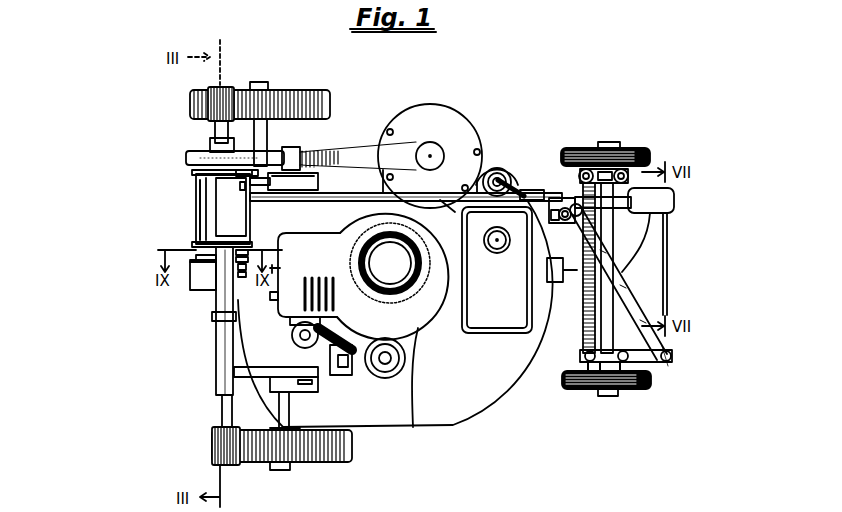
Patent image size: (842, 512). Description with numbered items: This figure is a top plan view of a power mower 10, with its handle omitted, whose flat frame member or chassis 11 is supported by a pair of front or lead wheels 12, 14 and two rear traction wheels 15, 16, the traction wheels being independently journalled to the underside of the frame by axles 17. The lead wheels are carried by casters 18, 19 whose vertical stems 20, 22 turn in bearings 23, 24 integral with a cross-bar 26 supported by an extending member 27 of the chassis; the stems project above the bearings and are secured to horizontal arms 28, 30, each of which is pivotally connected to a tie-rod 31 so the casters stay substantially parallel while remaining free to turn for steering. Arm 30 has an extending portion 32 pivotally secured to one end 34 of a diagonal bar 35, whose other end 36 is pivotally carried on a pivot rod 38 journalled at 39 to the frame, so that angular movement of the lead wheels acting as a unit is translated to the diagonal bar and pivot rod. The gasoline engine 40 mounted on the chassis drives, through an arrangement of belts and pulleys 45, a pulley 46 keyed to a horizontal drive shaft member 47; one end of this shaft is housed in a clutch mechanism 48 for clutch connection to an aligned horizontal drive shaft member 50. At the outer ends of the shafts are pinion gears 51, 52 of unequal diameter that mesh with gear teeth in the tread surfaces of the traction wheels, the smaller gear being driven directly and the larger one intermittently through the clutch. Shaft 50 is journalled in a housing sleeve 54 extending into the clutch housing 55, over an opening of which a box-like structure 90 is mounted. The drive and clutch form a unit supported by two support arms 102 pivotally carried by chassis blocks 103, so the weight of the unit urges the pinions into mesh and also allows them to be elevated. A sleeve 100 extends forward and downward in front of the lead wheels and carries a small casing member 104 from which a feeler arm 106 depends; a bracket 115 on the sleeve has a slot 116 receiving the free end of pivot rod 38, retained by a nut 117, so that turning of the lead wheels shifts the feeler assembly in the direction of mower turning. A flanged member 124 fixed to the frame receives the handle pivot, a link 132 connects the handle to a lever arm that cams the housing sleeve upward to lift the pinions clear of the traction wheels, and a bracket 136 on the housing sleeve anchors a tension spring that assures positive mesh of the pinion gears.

The power mower 10 is at (492, 114).
The frame member or chassis 11 is at (462, 405).
The front or lead wheel 12 is at (652, 158).
The front or lead wheel 14 is at (652, 382).
The traction wheel 15 is at (288, 97).
The traction wheel 16 is at (332, 456).
The axle 17 is at (267, 144).
The caster 18 is at (599, 146).
The caster 19 is at (600, 390).
The vertical stem 20 is at (646, 160).
The vertical stem 22 is at (625, 390).
The bearing 23 is at (622, 168).
The bearing 24 is at (619, 396).
The cross-bar 26 is at (585, 356).
The extending member 27 is at (572, 282).
The horizontal member or arm 28 is at (586, 169).
The horizontal member or arm 30 is at (574, 385).
The tie-rod 31 is at (586, 320).
The extending portion 32 is at (668, 360).
The end of diagonal bar 34 is at (670, 353).
The diagonal bar 35 is at (626, 316).
The end of diagonal bar 36 is at (596, 236).
The pivot rod 38 is at (522, 190).
The journal 39 is at (499, 172).
The motor 40 is at (418, 336).
The belts and pulleys 45 is at (349, 143).
The pulley 46 is at (188, 160).
The horizontal drive shaft member 47 is at (212, 142).
The clutch mechanism 48 is at (187, 186).
The horizontal drive shaft member 50 is at (224, 416).
The pinion gear 51 is at (228, 94).
The pinion gear 52 is at (214, 440).
The housing sleeve 54 is at (216, 360).
The clutch housing 55 is at (204, 222).
The box-like structure 90 is at (222, 206).
The sleeve 100 is at (318, 201).
The support arm 102 is at (268, 182).
The chassis block 103 is at (304, 190).
The casing member 104 is at (676, 202).
The feeler arm 106 is at (678, 254).
The bracket 115 is at (553, 198).
The slot 116 is at (557, 222).
The nut 117 is at (569, 207).
The flanged member 124 is at (200, 283).
The link 132 is at (196, 268).
The bracket 136 is at (214, 320).